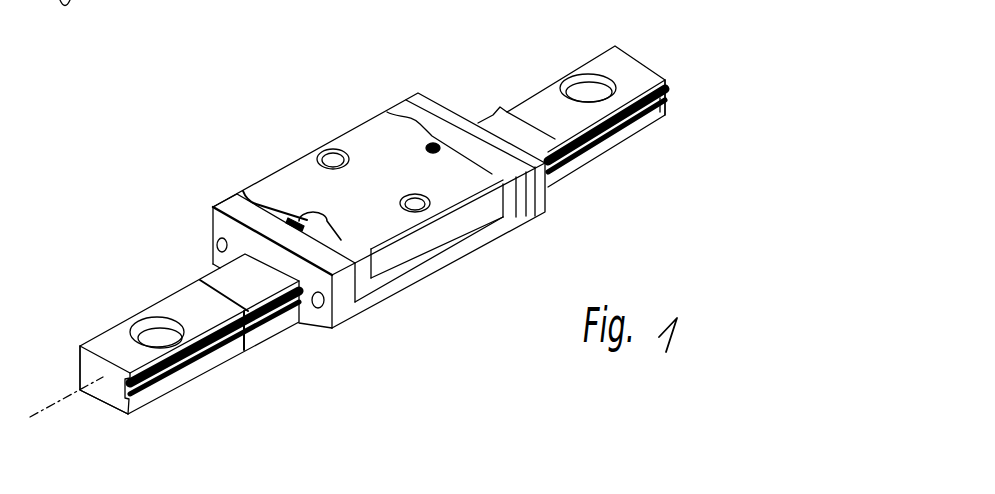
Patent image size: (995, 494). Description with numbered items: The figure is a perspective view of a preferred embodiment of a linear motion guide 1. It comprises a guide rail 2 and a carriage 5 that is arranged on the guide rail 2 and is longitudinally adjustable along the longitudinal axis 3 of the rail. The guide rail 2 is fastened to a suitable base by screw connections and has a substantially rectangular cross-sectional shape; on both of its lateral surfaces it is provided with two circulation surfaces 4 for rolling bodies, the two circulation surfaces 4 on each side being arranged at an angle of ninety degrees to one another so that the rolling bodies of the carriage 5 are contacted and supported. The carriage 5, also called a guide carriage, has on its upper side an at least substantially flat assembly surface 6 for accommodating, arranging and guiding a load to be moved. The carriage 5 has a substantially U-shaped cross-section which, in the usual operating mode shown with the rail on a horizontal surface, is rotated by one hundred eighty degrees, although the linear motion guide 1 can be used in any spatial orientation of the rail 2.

The linear motion guide 1 is at (530, 440).
The guide rail 2 is at (640, 67).
The longitudinal axis 3 is at (668, 64).
The circulation surfaces 4 is at (78, 364).
The carriage 5 is at (287, 130).
The assembly surface 6 is at (372, 153).